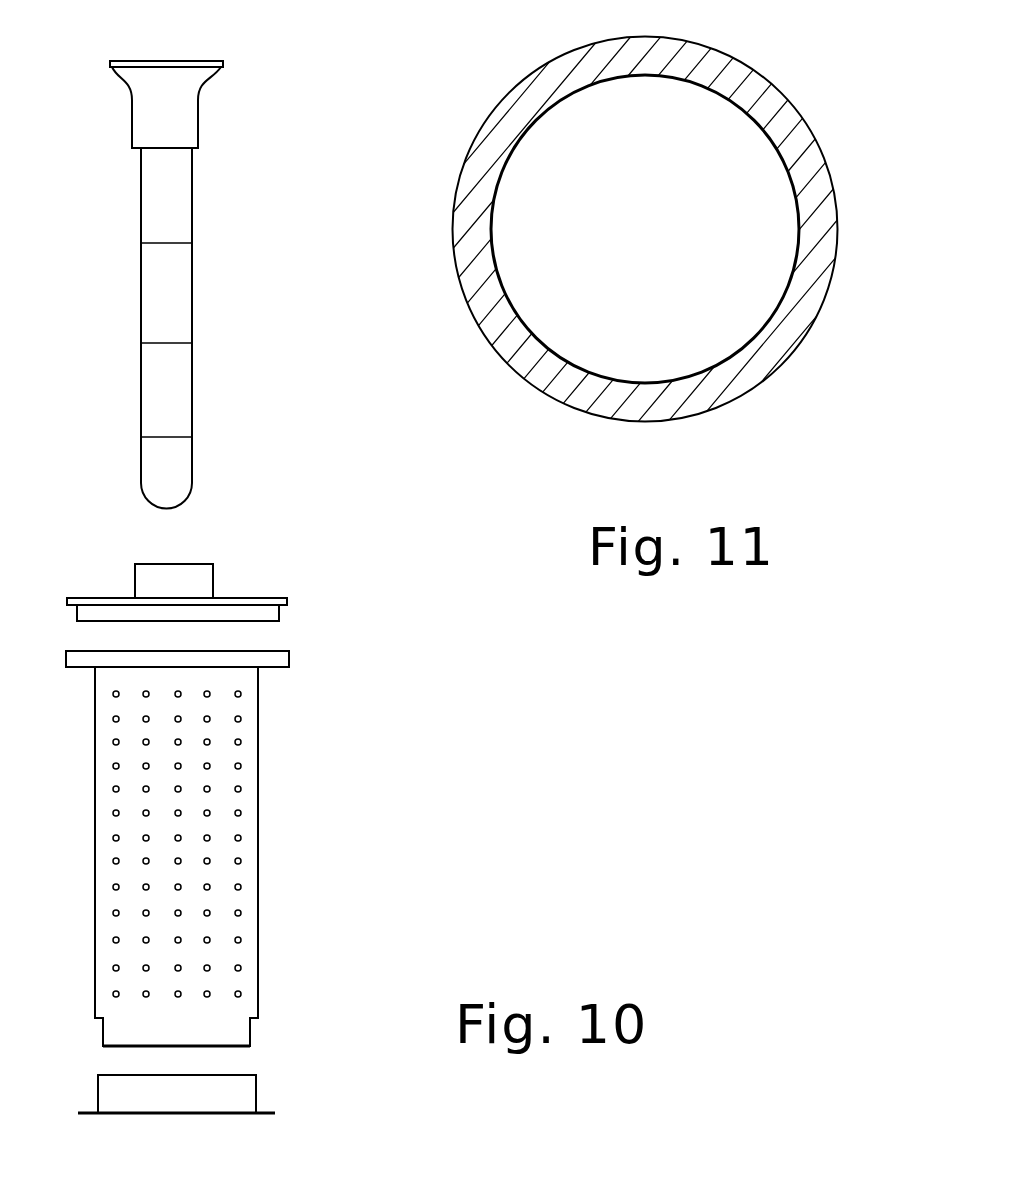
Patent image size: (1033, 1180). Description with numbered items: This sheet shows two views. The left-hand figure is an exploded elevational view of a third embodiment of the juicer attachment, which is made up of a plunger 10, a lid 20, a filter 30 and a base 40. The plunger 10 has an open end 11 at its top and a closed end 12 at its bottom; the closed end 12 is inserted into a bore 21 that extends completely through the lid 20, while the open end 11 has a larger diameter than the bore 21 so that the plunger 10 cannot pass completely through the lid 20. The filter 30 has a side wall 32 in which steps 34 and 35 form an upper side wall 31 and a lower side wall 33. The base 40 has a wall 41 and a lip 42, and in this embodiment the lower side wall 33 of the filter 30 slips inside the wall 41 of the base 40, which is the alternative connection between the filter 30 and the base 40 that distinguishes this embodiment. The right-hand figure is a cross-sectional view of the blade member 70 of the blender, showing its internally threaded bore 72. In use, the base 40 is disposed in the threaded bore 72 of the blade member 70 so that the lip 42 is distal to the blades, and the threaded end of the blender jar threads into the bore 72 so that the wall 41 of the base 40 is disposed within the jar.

In FIG. 10, the plunger 10 is at (193, 385).
In FIG. 10, the open end 11 is at (210, 62).
In FIG. 10, the closed end 12 is at (190, 500).
In FIG. 10, the lid 20 is at (283, 610).
In FIG. 10, the bore 21 is at (147, 563).
In FIG. 10, the filter 30 is at (258, 880).
In FIG. 10, the upper side wall 31 is at (292, 660).
In FIG. 10, the side wall 32 is at (258, 803).
In FIG. 10, the lower side wall 33 is at (250, 1030).
In FIG. 10, the step 34 is at (88, 668).
In FIG. 10, the step 35 is at (97, 1020).
In FIG. 10, the base 40 is at (257, 1093).
In FIG. 10, the wall 41 is at (97, 1090).
In FIG. 10, the lip 42 is at (85, 1115).
In FIG. 11, the blade member 70 is at (697, 393).
In FIG. 11, the internally threaded bore 72 is at (740, 300).